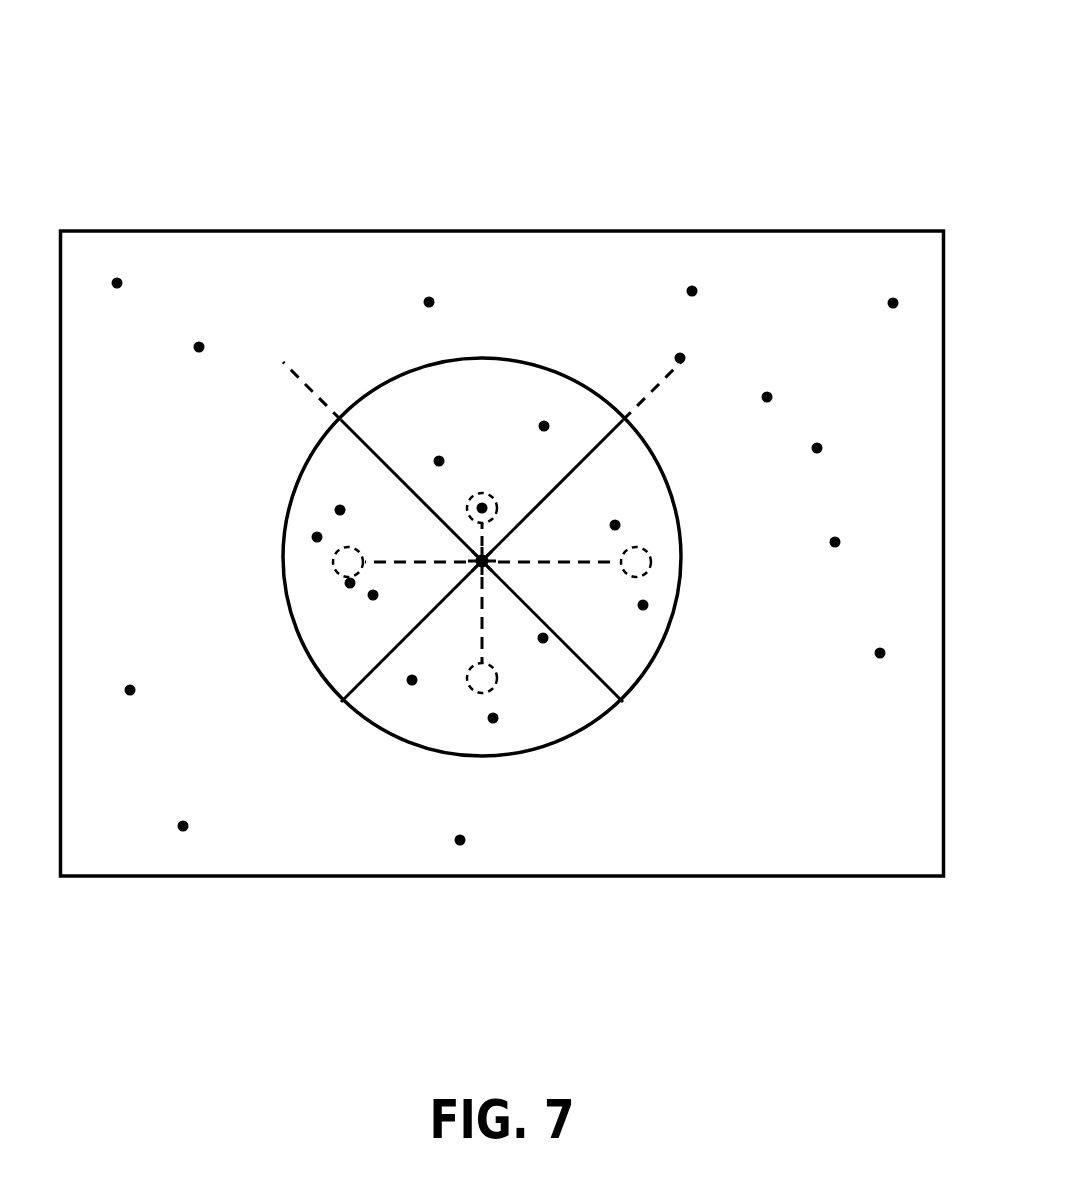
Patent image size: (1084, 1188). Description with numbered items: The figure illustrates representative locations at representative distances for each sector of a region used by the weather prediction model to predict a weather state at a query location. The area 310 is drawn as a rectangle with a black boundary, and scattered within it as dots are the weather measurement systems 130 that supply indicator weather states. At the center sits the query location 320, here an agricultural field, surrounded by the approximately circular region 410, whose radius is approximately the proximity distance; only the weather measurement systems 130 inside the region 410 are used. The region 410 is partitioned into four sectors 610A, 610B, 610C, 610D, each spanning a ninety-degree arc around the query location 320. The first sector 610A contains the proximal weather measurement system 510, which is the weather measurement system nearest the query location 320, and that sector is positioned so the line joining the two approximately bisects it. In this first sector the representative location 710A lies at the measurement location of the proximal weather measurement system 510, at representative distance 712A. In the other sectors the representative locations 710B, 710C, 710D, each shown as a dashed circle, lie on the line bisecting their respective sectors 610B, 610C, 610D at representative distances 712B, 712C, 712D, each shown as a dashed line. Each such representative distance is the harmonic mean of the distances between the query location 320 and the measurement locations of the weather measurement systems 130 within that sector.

The weather measurement systems 130 is at (407, 297).
The proximal weather measurement system 510 is at (488, 490).
The area 310 is at (827, 222).
The region 410 is at (610, 730).
The query location 320 is at (474, 582).
The first sector 610A is at (390, 410).
The sector 610B is at (338, 607).
The sector 610C is at (542, 715).
The sector 610D is at (643, 483).
The representative location 710A is at (475, 490).
The representative location 710B is at (332, 552).
The representative location 710C is at (472, 693).
The representative location 710D is at (655, 572).
The representative distance 712A is at (478, 540).
The representative distance 712B is at (380, 554).
The representative distance 712C is at (496, 619).
The representative distance 712D is at (539, 554).